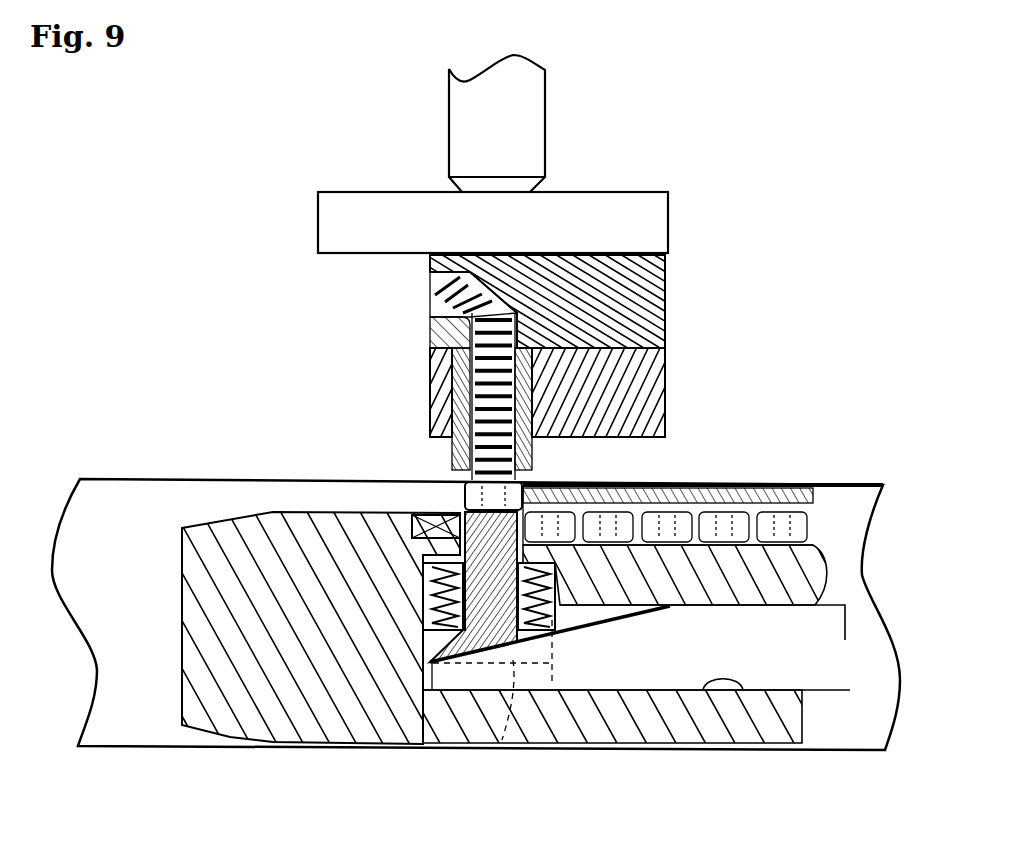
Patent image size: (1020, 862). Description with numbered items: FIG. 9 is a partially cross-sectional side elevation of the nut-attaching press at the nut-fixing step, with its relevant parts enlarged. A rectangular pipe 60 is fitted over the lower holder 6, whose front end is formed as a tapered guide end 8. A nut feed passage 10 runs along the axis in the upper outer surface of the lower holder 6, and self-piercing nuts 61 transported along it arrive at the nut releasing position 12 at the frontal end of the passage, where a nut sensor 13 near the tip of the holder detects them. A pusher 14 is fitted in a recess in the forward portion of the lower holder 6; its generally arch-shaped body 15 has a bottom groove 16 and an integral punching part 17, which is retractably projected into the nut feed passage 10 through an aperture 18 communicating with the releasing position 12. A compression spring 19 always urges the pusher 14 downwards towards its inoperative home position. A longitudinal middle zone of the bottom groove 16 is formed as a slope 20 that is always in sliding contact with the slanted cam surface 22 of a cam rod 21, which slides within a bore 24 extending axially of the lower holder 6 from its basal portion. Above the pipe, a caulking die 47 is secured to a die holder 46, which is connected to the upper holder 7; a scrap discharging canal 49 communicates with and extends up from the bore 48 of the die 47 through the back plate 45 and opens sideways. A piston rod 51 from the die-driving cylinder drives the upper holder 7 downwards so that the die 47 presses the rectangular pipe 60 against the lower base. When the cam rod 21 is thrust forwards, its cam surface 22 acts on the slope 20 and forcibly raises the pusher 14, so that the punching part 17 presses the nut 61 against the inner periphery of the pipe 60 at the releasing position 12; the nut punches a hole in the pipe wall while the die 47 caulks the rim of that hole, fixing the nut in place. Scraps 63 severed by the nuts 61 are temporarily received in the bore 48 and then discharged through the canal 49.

The lower holder 6 is at (680, 725).
The upper holder 7 is at (370, 203).
The tapered guide end 8 is at (205, 520).
The nut feed passage 10 is at (813, 577).
The nut releasing position 12 is at (542, 483).
The nut sensor 13 is at (432, 515).
The pusher 14 is at (430, 662).
The pusher body 15 is at (427, 676).
The bottom groove 16 is at (502, 740).
The punching part 17 is at (432, 555).
The aperture 18 is at (462, 498).
The compression spring 19 is at (425, 603).
The slope 20 is at (463, 665).
The cam rod 21 is at (827, 667).
The cam surface 22 is at (580, 607).
The bore 24 is at (745, 690).
The back plate 45 is at (653, 283).
The die holder 46 is at (667, 368).
The caulking die 47 is at (460, 366).
The bore of the die 48 is at (485, 397).
The scrap discharging canal 49 is at (440, 280).
The piston rod 51 is at (542, 130).
The rectangular pipe 60 is at (172, 480).
The self-piercing nuts 61 is at (775, 520).
The scraps 63 is at (430, 320).